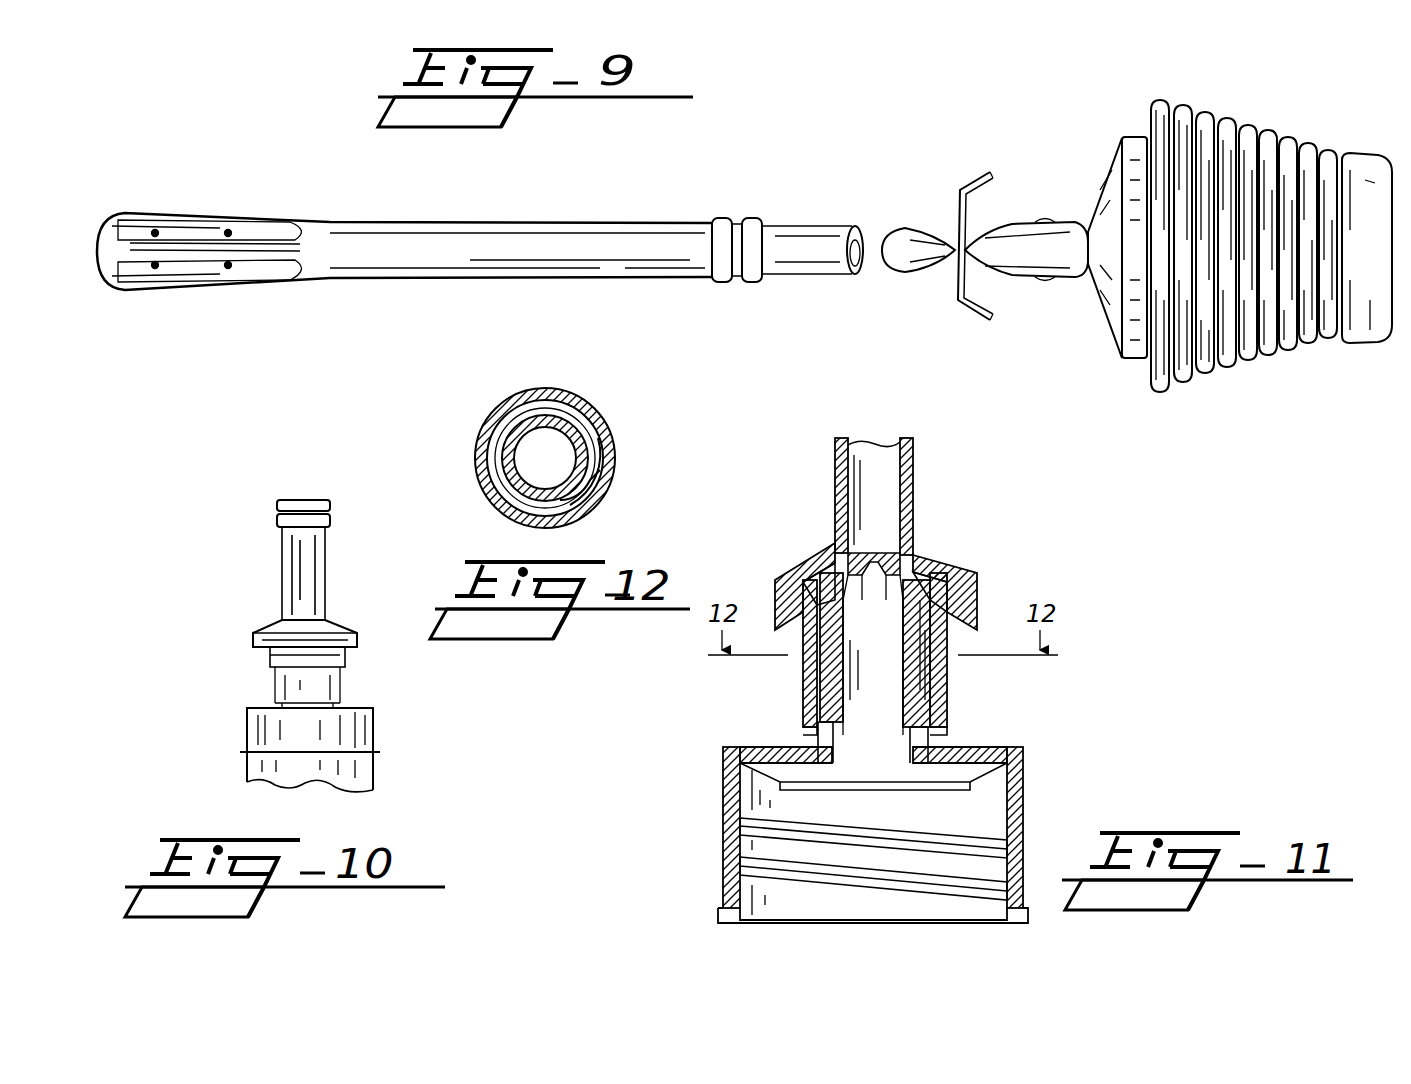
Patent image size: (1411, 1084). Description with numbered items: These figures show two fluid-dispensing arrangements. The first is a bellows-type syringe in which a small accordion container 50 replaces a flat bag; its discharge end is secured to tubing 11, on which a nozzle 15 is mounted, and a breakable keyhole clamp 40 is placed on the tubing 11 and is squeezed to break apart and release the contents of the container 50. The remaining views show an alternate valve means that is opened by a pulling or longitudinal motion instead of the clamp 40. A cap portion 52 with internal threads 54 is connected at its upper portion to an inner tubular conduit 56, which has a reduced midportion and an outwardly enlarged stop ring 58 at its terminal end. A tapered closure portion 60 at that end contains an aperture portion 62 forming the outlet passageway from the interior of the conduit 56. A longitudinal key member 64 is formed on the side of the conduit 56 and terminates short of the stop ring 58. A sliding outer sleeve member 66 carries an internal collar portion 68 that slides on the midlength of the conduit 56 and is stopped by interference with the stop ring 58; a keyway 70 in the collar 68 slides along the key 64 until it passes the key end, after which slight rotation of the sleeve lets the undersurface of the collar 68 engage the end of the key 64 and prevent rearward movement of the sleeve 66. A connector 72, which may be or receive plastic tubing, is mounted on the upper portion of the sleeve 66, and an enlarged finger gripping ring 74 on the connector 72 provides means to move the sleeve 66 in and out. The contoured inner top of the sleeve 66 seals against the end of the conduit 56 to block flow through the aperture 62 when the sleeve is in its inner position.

In FIG. 9, the tubing 11 is at (897, 232).
In FIG. 9, the nozzle 15 is at (490, 222).
In FIG. 9, the keyhole clamp 40 is at (992, 152).
In FIG. 9, the accordion container 50 is at (1283, 54).
In FIG. 10, the cap portion 52 is at (255, 727).
In FIG. 11, the cap portion 52 is at (740, 765).
In FIG. 11, the internal threads 54 is at (862, 888).
In FIG. 12, the tubular conduit 56 is at (560, 420).
In FIG. 11, the tubular conduit 56 is at (833, 657).
In FIG. 11, the stop ring 58 is at (780, 575).
In FIG. 11, the tapered closure portion 60 is at (875, 555).
In FIG. 11, the aperture portion 62 is at (835, 557).
In FIG. 12, the longitudinal key member 64 is at (596, 460).
In FIG. 11, the longitudinal key member 64 is at (935, 632).
In FIG. 12, the sliding outer sleeve member 66 is at (498, 412).
In FIG. 12, the internal collar portion 68 is at (528, 412).
In FIG. 11, the internal collar portion 68 is at (815, 672).
In FIG. 12, the keyway 70 is at (590, 482).
In FIG. 10, the connector 72 is at (295, 568).
In FIG. 11, the connector 72 is at (950, 560).
In FIG. 10, the finger gripping ring 74 is at (256, 637).